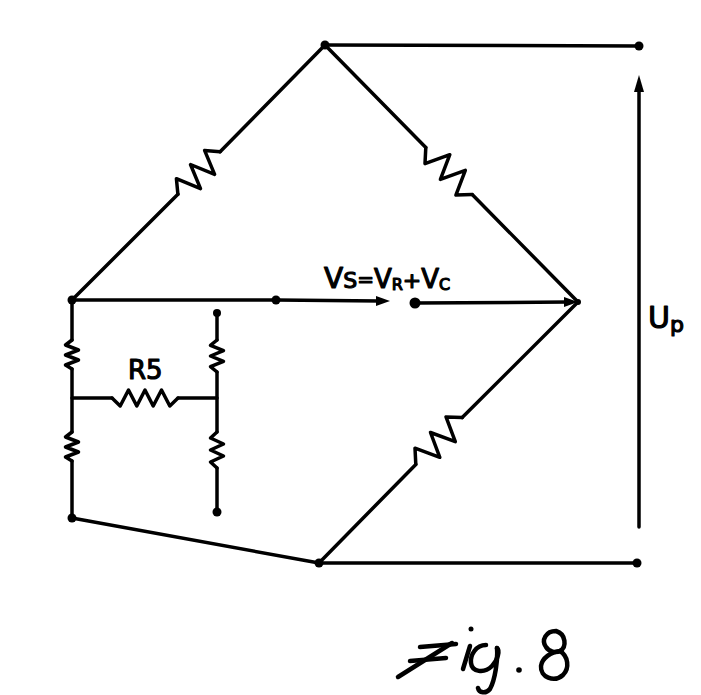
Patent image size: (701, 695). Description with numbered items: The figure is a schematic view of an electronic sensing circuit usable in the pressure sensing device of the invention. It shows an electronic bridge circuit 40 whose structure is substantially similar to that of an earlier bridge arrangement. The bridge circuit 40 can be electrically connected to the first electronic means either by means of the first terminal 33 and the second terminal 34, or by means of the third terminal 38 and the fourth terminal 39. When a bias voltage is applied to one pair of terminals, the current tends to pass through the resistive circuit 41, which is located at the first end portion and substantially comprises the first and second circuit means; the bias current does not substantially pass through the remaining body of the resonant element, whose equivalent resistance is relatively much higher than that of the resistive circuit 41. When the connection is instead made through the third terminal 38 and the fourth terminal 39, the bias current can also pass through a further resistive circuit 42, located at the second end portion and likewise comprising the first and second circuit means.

The first terminal 33 is at (53, 294).
The second terminal 34 is at (49, 526).
The third terminal 38 is at (239, 324).
The fourth terminal 39 is at (238, 526).
The electronic bridge circuit 40 is at (176, 142).
The resistive circuit 41 is at (59, 341).
The resistive circuit 42 is at (232, 341).